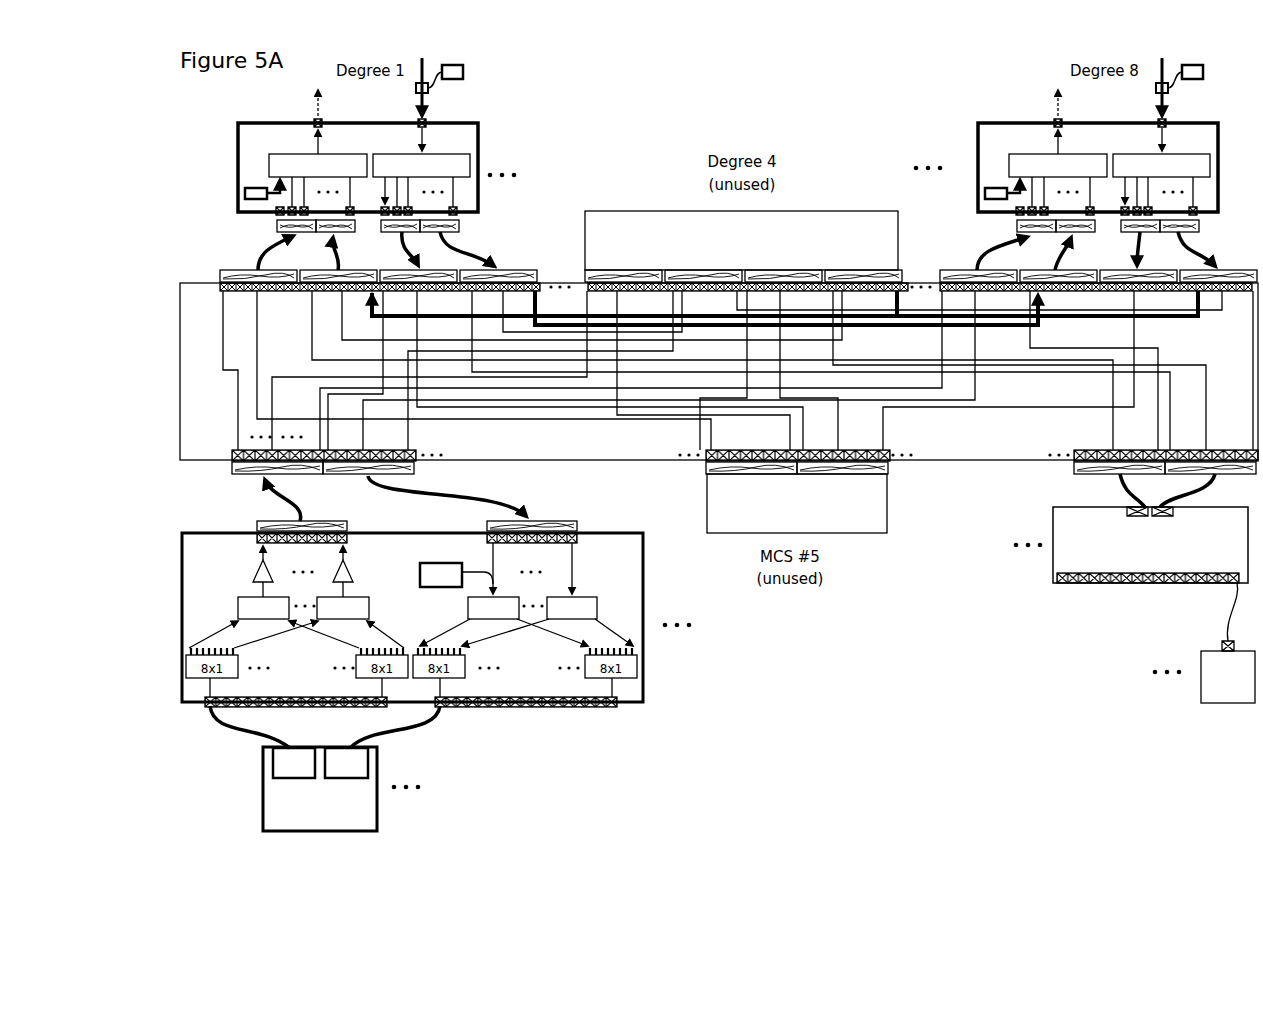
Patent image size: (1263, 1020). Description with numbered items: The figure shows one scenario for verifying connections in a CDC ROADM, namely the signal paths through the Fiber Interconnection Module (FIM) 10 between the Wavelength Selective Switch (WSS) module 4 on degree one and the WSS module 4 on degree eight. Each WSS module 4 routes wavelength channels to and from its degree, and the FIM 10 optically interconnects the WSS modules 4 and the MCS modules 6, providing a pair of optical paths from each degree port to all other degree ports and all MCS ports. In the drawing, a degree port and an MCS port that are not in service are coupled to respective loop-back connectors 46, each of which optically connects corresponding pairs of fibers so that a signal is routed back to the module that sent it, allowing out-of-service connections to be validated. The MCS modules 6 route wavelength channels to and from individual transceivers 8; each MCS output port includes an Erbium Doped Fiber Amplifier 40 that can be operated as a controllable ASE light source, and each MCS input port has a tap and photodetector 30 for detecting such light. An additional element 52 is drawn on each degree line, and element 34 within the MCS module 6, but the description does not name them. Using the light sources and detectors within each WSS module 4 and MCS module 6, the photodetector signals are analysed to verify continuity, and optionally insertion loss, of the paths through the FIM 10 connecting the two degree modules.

The Wavelength Selective Switch (WSS) module 4 is at (705, 145).
The optical amplifier on degree line 52 is at (463, 73).
The loop-back connector 46 is at (628, 211).
The Fiber Interconnection Module (FIM) 10 is at (209, 353).
The MCS module 6 is at (624, 569).
The Erbium Doped Fiber Amplifier (EDFA) 40 is at (253, 574).
The photodetector (PD) 30 is at (420, 575).
The 8x1 optical switch 34 is at (238, 665).
The transceiver 8 is at (263, 797).